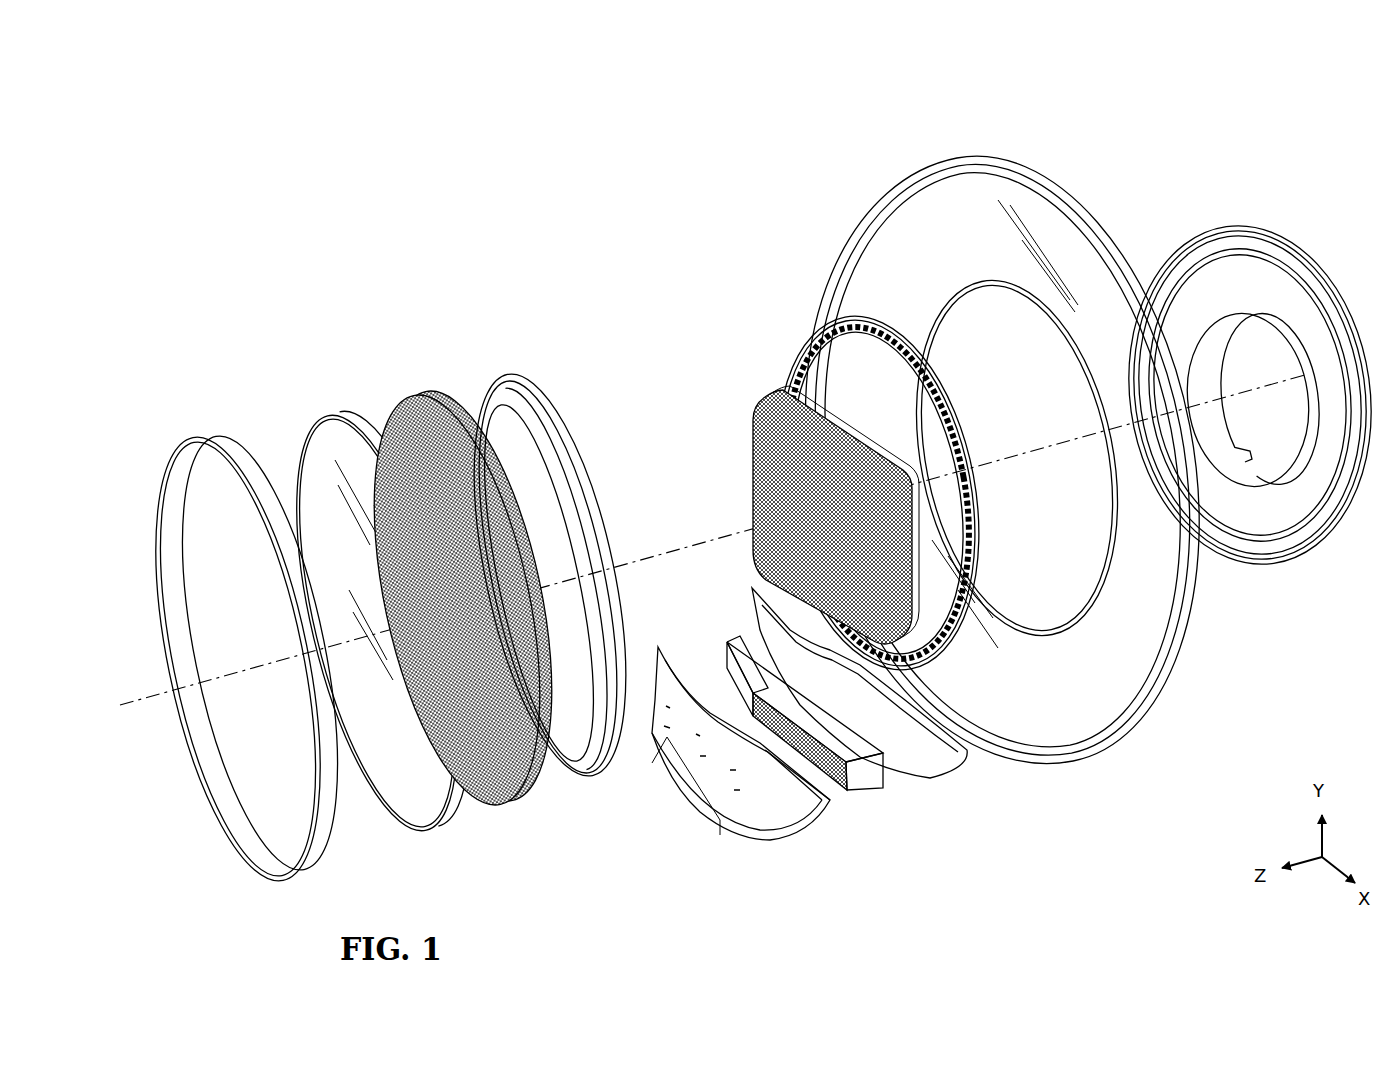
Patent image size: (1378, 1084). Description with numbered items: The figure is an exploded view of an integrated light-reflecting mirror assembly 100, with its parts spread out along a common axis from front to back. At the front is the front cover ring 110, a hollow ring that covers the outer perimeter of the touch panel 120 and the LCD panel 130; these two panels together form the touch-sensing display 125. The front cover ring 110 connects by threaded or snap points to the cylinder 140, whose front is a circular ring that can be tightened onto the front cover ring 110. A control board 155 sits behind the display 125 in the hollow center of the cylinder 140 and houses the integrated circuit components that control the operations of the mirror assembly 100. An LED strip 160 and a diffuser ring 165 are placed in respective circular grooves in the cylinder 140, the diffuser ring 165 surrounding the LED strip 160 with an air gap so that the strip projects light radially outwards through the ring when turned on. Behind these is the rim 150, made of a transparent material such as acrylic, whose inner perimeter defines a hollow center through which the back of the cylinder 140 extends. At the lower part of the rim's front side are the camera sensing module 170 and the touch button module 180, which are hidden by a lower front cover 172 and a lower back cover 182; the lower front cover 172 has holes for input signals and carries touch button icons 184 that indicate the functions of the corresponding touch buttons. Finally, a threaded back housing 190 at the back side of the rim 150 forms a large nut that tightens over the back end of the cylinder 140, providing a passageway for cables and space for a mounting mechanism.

The mirror assembly 100 is at (1345, 120).
The front cover ring 110 is at (199, 438).
The touch panel 120 is at (328, 415).
The display 125 is at (455, 240).
The LCD panel 130 is at (416, 394).
The cylinder 140 is at (510, 374).
The rim 150 is at (1103, 683).
The control board 155 is at (770, 392).
The LED strip 160 is at (830, 322).
The diffuser ring 165 is at (878, 322).
The camera sensing module 170 is at (735, 638).
The lower front cover 172 is at (778, 803).
The touch button module 180 is at (856, 782).
The lower back cover 182 is at (953, 745).
The touch button icons 184 is at (700, 762).
The back housing 190 is at (1176, 255).